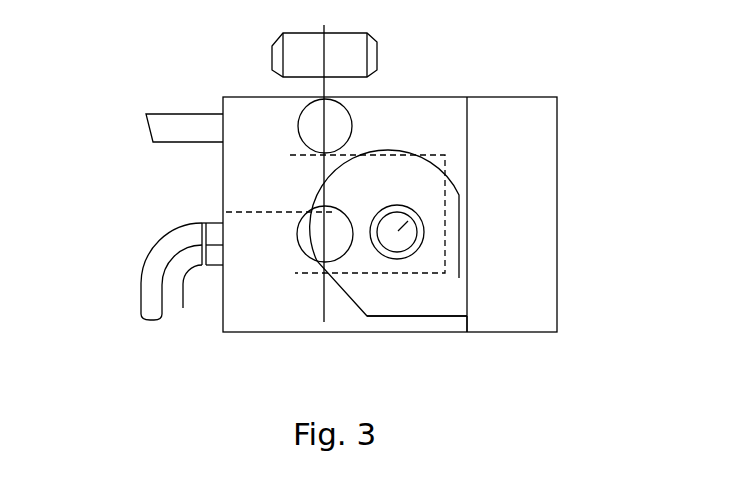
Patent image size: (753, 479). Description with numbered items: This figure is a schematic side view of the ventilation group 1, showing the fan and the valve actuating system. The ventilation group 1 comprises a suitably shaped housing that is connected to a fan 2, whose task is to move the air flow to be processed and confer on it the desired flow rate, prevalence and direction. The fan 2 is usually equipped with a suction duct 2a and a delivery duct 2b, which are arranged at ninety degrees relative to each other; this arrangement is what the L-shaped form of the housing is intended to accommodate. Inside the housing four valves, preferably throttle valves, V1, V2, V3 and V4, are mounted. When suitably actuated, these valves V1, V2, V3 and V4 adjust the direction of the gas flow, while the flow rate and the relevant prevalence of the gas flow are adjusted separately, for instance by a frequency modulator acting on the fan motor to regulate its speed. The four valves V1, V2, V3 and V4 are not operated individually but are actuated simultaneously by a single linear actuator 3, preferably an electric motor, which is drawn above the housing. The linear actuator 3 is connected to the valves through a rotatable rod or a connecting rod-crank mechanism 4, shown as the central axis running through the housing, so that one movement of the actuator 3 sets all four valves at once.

The ventilation group 1 is at (562, 68).
The fan 2 is at (429, 142).
The suction duct 2a is at (424, 219).
The delivery duct 2b is at (470, 327).
The linear actuator 3 is at (282, 53).
The connecting rod-crank mechanism 4 is at (325, 87).
The throttle valve V1 is at (307, 125).
The throttle valve V2 is at (318, 177).
The throttle valve V3 is at (303, 243).
The throttle valve V4 is at (320, 307).